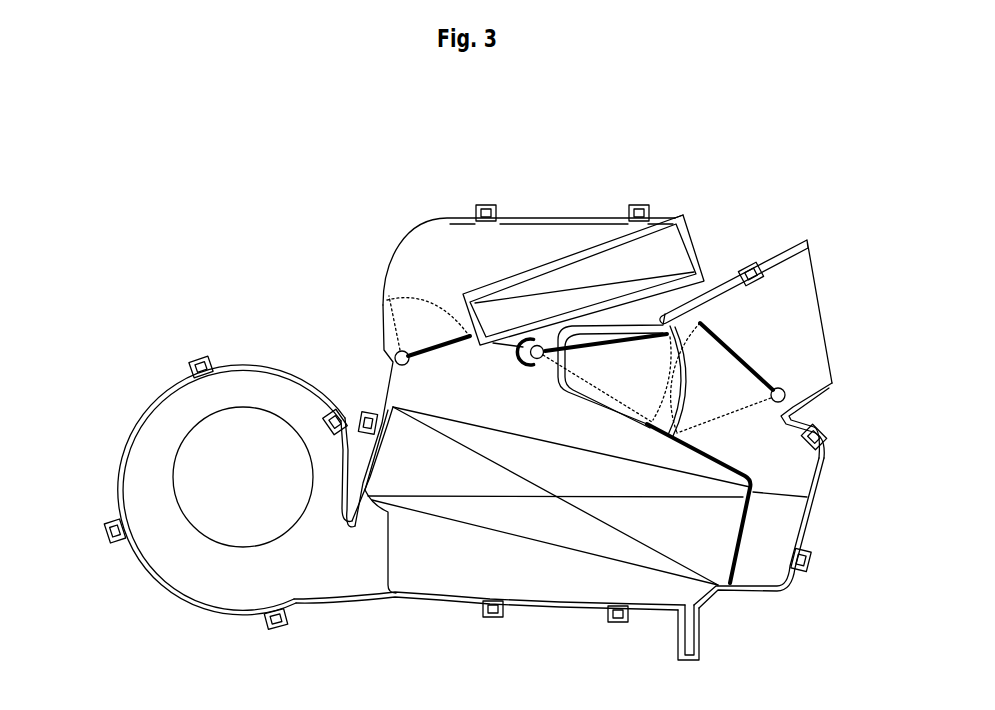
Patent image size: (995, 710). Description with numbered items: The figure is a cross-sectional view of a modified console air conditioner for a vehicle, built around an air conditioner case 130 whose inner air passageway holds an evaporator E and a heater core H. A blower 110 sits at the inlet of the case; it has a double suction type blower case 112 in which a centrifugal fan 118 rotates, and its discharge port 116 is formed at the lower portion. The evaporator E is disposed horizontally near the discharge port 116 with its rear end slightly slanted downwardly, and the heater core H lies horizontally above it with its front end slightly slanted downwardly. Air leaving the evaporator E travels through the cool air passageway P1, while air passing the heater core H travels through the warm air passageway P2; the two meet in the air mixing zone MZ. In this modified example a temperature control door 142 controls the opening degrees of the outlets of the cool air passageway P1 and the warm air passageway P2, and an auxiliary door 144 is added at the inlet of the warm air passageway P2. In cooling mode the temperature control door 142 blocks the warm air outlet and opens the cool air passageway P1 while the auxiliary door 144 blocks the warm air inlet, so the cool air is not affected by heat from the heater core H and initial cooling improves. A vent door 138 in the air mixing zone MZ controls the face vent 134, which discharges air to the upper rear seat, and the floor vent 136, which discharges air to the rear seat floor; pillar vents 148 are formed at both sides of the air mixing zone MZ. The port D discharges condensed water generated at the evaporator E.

The blower 110 is at (229, 485).
The blower case 112 is at (172, 604).
The discharge port 116 is at (360, 577).
The centrifugal fan 118 is at (234, 547).
The air conditioner case 130 is at (414, 226).
The face vent 134 is at (810, 312).
The floor vent 136 is at (767, 575).
The vent door 138 is at (737, 340).
The temperature control door 142 is at (556, 377).
The auxiliary door 144 is at (438, 354).
The pillar vent 148 is at (593, 388).
The heater core H is at (613, 260).
The evaporator E is at (633, 552).
The discharge port D is at (692, 633).
The cool air passageway P1 is at (615, 442).
The warm air passageway P2 is at (425, 292).
The air mixing zone MZ is at (716, 395).